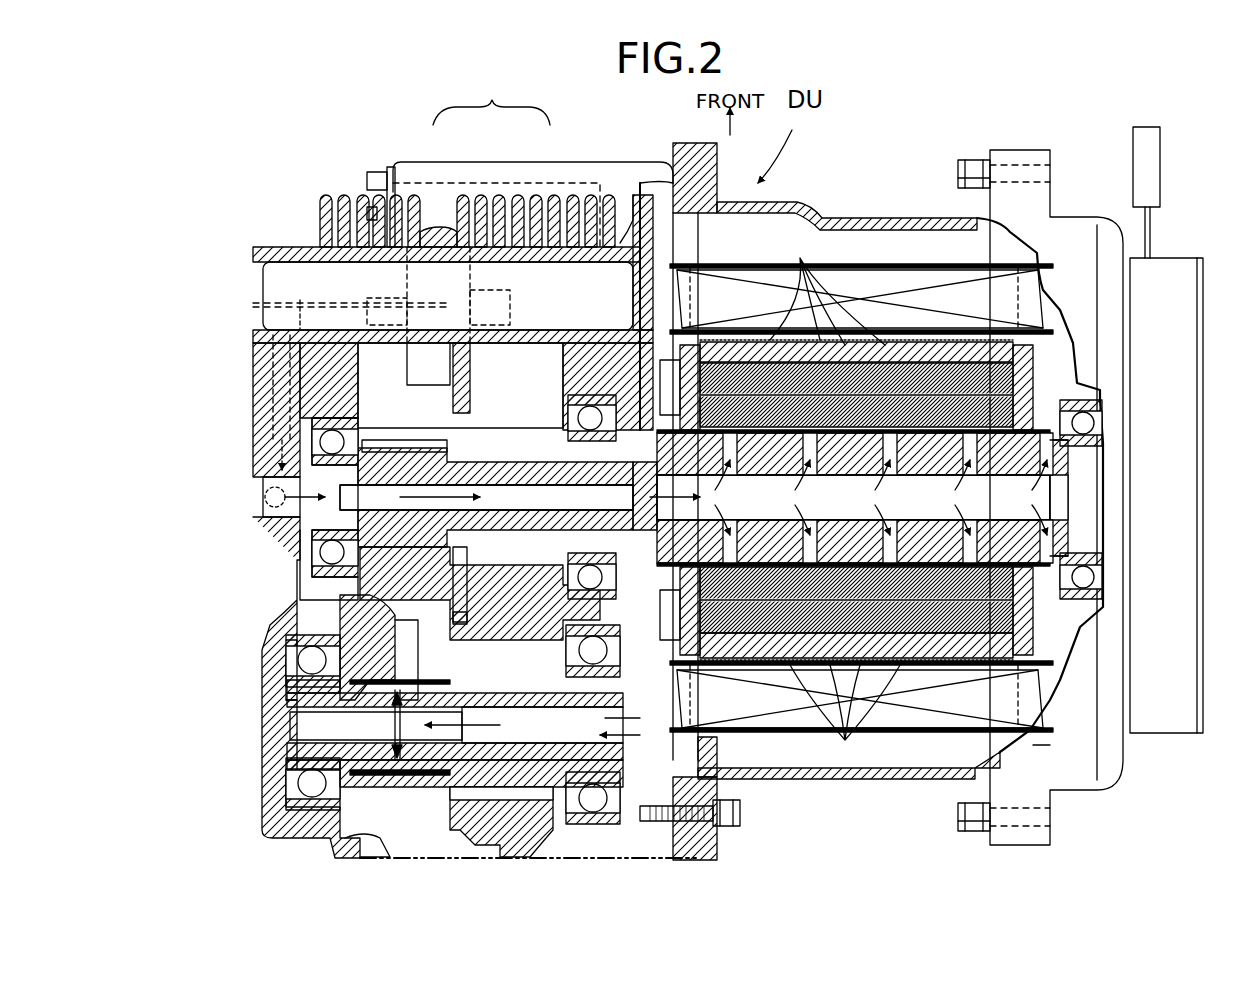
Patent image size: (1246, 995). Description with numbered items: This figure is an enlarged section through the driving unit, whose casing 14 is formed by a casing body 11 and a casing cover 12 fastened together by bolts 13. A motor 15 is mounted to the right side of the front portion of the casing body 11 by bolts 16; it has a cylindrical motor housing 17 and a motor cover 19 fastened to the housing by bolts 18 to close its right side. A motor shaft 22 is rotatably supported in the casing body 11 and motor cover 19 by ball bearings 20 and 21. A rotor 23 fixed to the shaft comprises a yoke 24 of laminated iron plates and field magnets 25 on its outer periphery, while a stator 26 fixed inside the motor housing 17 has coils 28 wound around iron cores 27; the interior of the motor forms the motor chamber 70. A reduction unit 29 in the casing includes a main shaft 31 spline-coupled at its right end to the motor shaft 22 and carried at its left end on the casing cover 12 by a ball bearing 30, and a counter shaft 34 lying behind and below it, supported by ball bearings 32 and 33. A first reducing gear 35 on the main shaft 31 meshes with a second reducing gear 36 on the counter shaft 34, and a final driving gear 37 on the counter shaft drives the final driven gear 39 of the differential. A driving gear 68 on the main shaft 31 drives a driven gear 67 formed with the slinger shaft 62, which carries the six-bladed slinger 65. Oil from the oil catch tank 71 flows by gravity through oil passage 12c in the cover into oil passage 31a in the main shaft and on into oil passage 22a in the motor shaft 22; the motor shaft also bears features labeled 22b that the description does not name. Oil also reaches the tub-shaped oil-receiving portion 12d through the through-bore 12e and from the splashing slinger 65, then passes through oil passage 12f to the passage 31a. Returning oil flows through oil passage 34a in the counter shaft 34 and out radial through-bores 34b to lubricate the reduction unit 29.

The casing body 11 is at (538, 162).
The casing cover 12 is at (452, 333).
The oil passage 12c is at (262, 490).
The oil-receiving portion 12d is at (300, 320).
The through-bore 12e is at (455, 345).
The oil passage 12f is at (270, 370).
The bolts 13 is at (366, 181).
The casing 14 is at (491, 99).
The motor 15 is at (853, 205).
The bolts 16 is at (740, 812).
The motor housing 17 is at (810, 205).
The bolts 18 is at (965, 173).
The motor cover 19 is at (1080, 227).
The ball bearing 20 is at (590, 400).
The ball bearing 21 is at (1072, 405).
The motor shaft 22 is at (1050, 563).
The oil passage 22a is at (733, 510).
The radial hole 22b is at (1020, 510).
The rotor 23 is at (1040, 350).
The yoke 24 is at (840, 450).
The field magnets 25 is at (835, 498).
The stator 26 is at (933, 740).
The iron cores 27 is at (695, 290).
The coils 28 is at (870, 290).
The reduction unit 29 is at (375, 590).
The ball bearing 30 is at (350, 440).
The main shaft 31 is at (540, 540).
The oil passage 31a is at (563, 510).
The ball bearing 32 is at (580, 650).
The ball bearing 33 is at (340, 650).
The counter shaft 34 is at (428, 680).
The oil passage 34a is at (578, 733).
The through-bores 34b is at (385, 740).
The first reducing gear 35 is at (395, 445).
The second reducing gear 36 is at (486, 498).
The final driving gear 37 is at (515, 650).
The final driven gear 39 is at (505, 790).
The slinger shaft 62 is at (510, 300).
The slinger 65 is at (400, 298).
The driven gear 67 is at (470, 285).
The driving gear 68 is at (460, 610).
The motor chamber 70 is at (664, 251).
The oil catch tank 71 is at (611, 303).